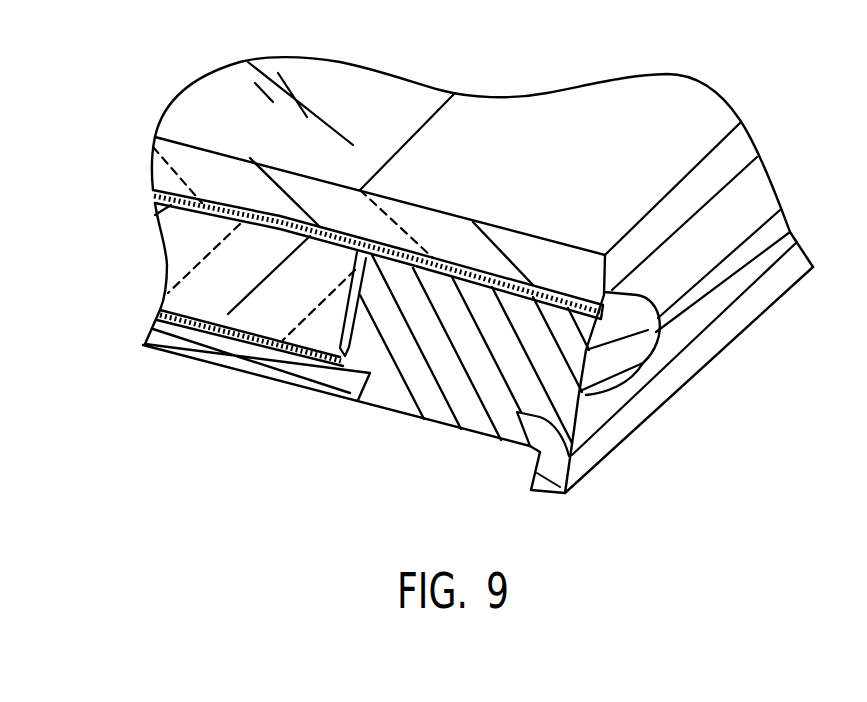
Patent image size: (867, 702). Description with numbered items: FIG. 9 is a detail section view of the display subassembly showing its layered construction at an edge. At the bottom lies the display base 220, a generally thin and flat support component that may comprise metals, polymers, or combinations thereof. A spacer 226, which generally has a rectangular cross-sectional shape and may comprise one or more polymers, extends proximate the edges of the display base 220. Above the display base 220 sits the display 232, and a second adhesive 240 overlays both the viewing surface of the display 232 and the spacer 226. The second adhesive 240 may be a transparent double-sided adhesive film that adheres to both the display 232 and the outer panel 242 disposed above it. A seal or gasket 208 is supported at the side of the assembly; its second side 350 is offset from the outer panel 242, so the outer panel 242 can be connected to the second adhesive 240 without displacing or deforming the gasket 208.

The outer panel 242 is at (494, 110).
The second adhesive 240 is at (157, 185).
The display 232 is at (165, 262).
The display base 220 is at (222, 362).
The spacer 226 is at (427, 420).
The gasket 208 is at (690, 327).
The second side of the gasket 350 is at (597, 293).